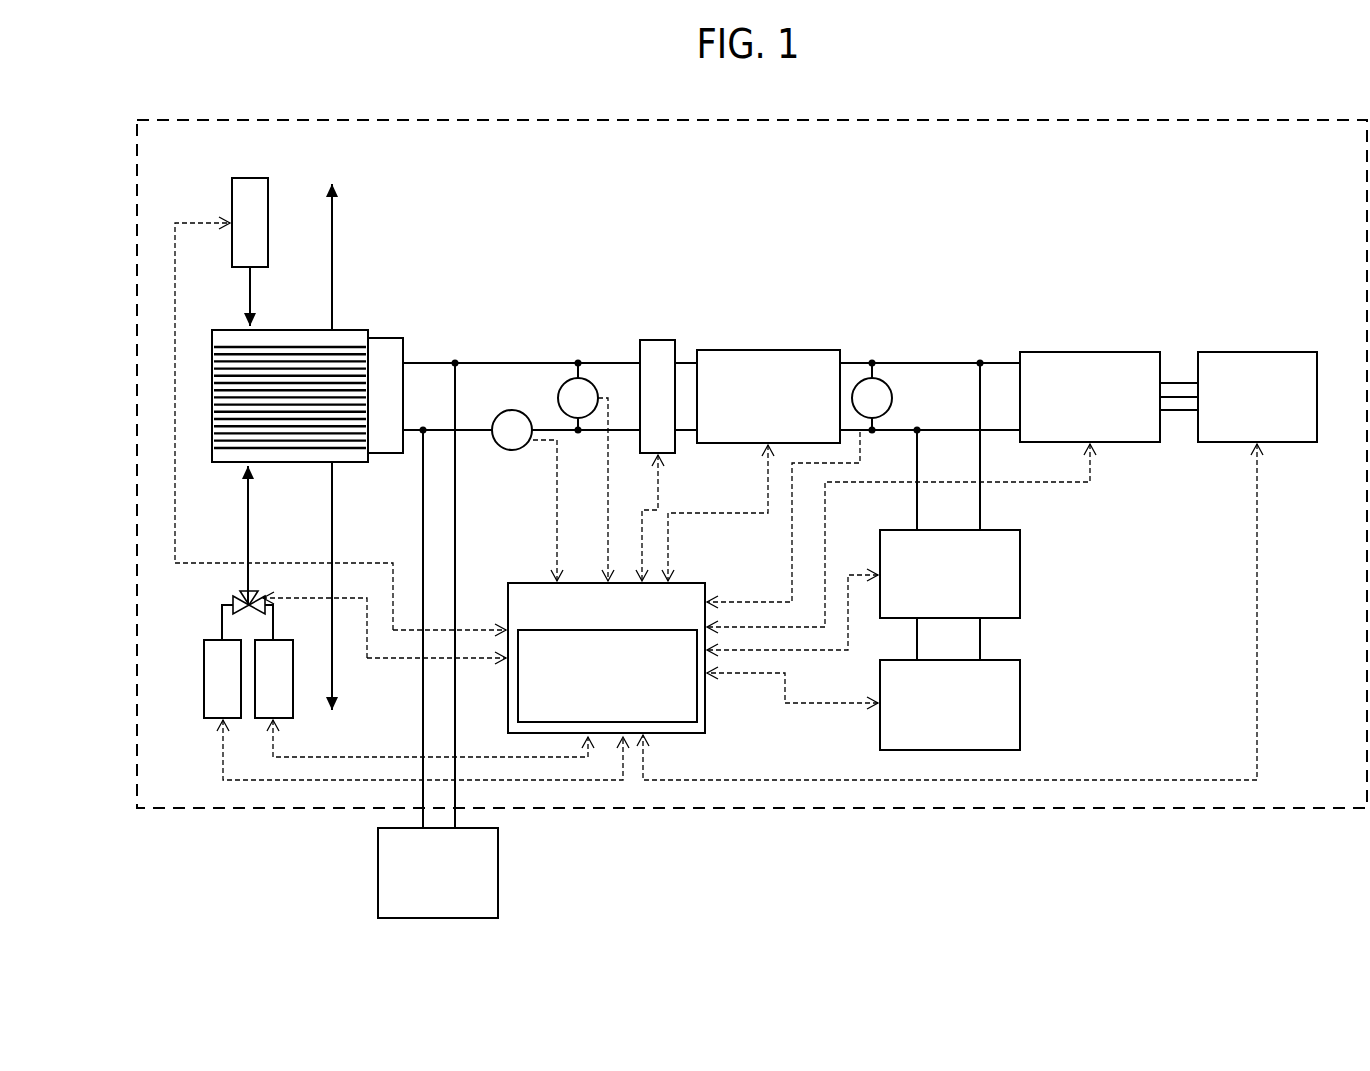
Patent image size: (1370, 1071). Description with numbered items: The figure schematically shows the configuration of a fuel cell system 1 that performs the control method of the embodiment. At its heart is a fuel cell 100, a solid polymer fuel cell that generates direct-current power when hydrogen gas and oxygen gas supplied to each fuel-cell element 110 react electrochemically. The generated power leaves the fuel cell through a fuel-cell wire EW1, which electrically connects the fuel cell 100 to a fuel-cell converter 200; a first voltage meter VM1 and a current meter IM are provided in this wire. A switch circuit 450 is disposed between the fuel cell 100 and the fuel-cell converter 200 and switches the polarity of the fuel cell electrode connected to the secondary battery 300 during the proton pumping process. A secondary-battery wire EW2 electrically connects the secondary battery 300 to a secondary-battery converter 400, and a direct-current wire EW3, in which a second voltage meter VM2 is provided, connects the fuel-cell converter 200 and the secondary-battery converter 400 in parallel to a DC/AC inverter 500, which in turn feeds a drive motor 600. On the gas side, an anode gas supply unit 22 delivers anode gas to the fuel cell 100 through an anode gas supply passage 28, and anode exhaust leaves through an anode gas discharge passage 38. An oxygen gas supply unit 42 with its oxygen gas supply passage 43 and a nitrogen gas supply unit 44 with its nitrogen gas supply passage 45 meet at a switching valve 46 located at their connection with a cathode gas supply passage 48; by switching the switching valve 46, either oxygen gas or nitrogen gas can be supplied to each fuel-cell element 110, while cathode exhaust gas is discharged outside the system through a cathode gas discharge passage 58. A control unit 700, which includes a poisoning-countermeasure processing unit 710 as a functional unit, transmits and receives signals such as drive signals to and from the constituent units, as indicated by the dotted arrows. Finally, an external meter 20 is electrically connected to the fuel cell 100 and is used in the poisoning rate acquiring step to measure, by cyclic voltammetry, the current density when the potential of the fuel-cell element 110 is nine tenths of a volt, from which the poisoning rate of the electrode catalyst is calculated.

The fuel cell system 1 is at (1290, 197).
The external meter 20 is at (500, 854).
The anode gas supply unit 22 is at (268, 178).
The anode gas supply passage 28 is at (246, 297).
The anode gas discharge passage 38 is at (328, 297).
The oxygen gas supply unit 42 is at (214, 723).
The oxygen gas supply passage 43 is at (222, 628).
The nitrogen gas supply unit 44 is at (296, 723).
The nitrogen gas supply passage 45 is at (274, 628).
The switching valve 46 is at (235, 597).
The cathode gas supply passage 48 is at (246, 512).
The cathode gas discharge passage 58 is at (328, 512).
The fuel cell 100 is at (324, 370).
The fuel-cell element 110 is at (370, 391).
The fuel-cell converter 200 is at (772, 350).
The secondary battery 300 is at (1022, 703).
The secondary-battery converter 400 is at (1022, 578).
The switch circuit 450 is at (658, 340).
The DC/AC inverter 500 is at (1088, 352).
The drive motor 600 is at (1255, 352).
The control unit 700 is at (589, 629).
The poisoning-countermeasure processing unit 710 is at (526, 631).
The fuel-cell wire EW1 is at (527, 362).
The secondary-battery wire EW2 is at (930, 362).
The direct-current wire EW3 is at (982, 507).
The current meter IM is at (512, 451).
The first voltage meter VM1 is at (556, 393).
The second voltage meter VM2 is at (890, 391).